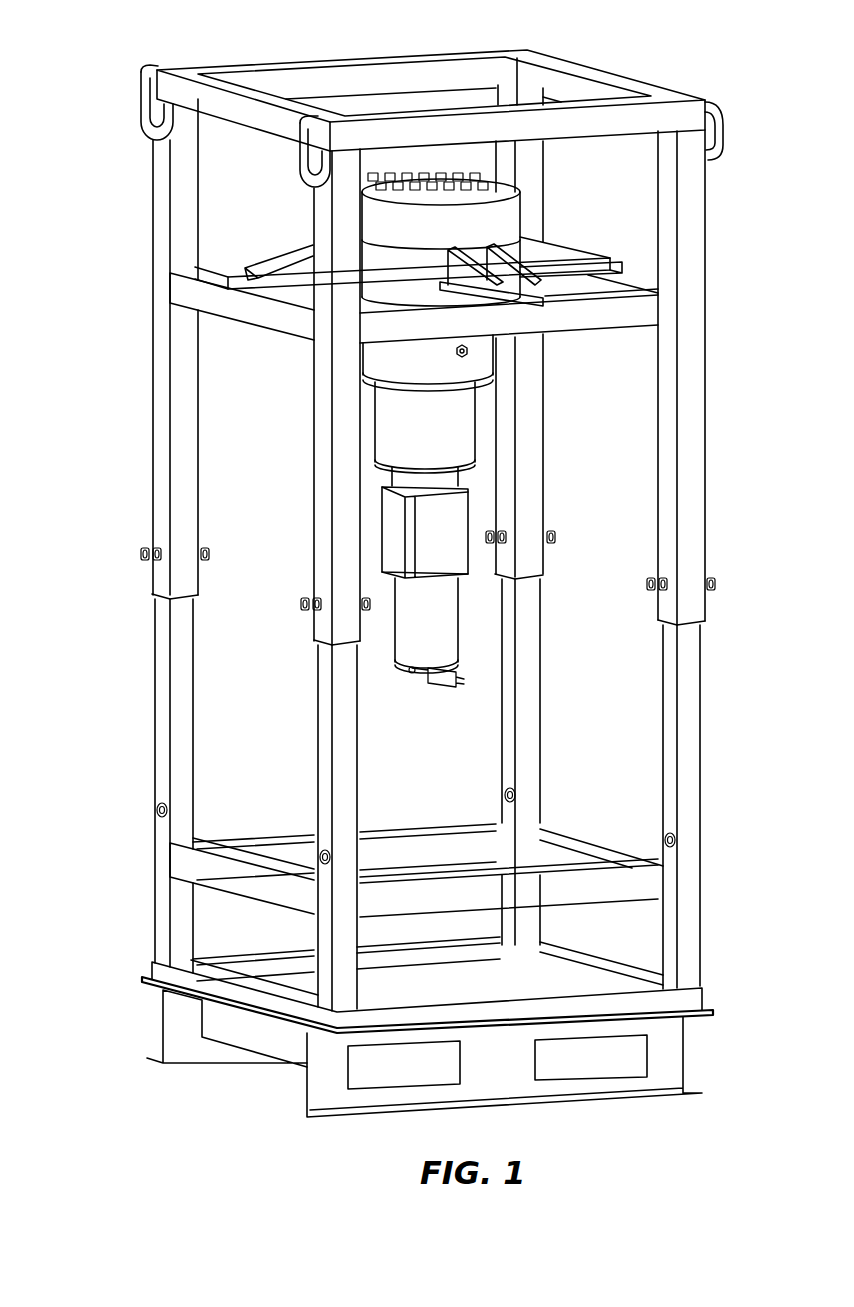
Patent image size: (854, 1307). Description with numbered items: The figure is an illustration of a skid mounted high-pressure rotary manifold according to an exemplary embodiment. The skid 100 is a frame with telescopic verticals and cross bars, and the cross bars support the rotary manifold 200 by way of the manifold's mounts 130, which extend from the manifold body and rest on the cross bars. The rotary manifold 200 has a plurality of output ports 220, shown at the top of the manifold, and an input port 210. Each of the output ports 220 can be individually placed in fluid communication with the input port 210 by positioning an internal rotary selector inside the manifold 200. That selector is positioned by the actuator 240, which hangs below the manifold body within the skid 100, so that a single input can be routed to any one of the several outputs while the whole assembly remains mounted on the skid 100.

The skid 100 is at (154, 726).
The mounts 130 is at (287, 252).
The rotary manifold 200 is at (488, 411).
The input port 210 is at (468, 352).
The output ports 220 is at (410, 171).
The actuator 240 is at (445, 620).